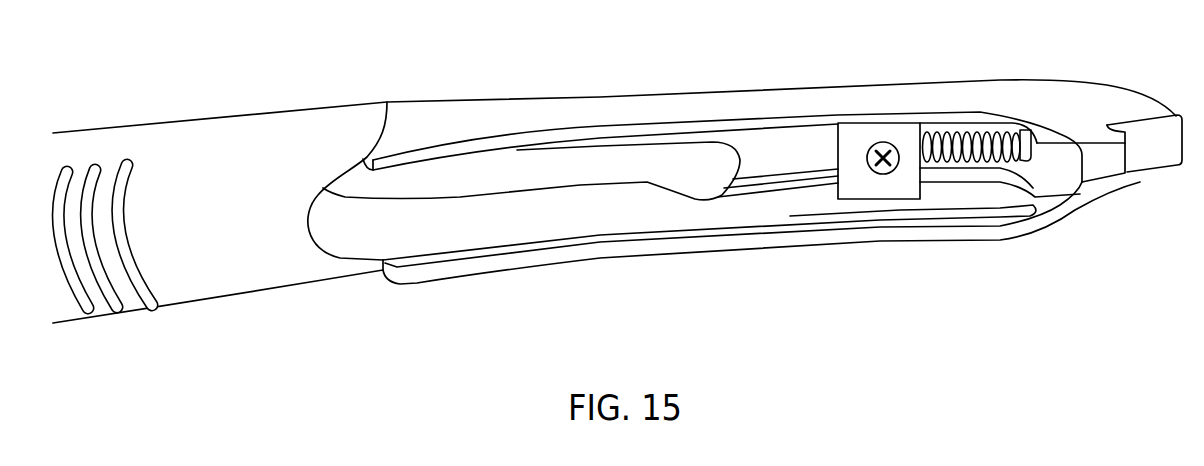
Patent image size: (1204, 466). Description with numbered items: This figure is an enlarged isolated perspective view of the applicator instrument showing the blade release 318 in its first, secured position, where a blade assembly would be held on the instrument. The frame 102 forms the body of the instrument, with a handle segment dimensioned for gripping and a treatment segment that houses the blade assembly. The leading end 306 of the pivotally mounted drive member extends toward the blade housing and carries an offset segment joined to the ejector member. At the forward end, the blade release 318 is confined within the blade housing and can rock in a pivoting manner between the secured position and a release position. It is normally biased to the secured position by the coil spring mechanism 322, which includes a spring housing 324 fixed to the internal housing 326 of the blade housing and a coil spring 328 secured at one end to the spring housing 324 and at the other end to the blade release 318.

The frame 102 is at (540, 98).
The leading end 306 is at (475, 178).
The blade release 318 is at (1153, 163).
The coil spring mechanism 322 is at (913, 203).
The spring housing 324 is at (860, 183).
The internal housing 326 is at (806, 143).
The coil spring 328 is at (971, 133).